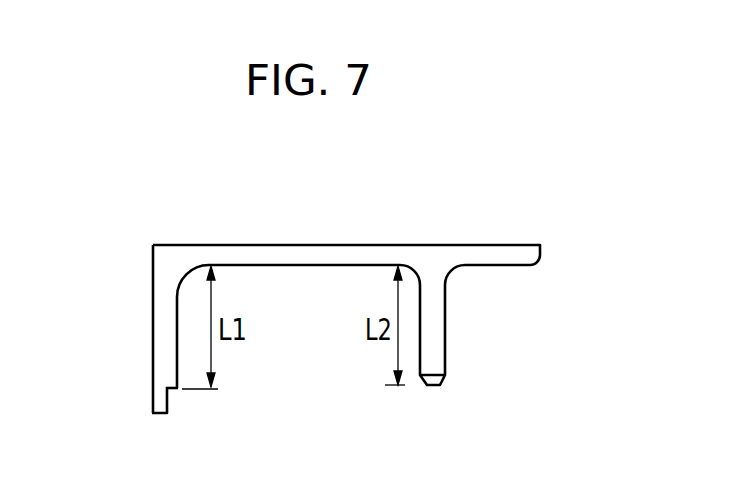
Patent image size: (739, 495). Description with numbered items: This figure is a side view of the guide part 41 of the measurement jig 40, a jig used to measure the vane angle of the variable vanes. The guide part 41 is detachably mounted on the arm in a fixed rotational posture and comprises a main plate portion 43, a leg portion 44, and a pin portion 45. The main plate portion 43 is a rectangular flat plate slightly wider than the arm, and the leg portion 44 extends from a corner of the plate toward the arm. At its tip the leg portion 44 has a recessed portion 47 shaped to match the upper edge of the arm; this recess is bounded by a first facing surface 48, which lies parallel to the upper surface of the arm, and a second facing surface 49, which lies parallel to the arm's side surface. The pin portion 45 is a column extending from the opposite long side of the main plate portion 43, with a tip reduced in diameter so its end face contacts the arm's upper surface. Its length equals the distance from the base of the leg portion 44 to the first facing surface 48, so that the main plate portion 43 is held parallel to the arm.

The measurement jig 40 is at (309, 302).
The guide part 41 is at (309, 302).
The main plate portion 43 is at (282, 252).
The leg portion 44 is at (160, 328).
The pin portion 45 is at (437, 337).
The recessed portion 47 is at (236, 429).
The first facing surface 48 is at (170, 393).
The second facing surface 49 is at (170, 407).